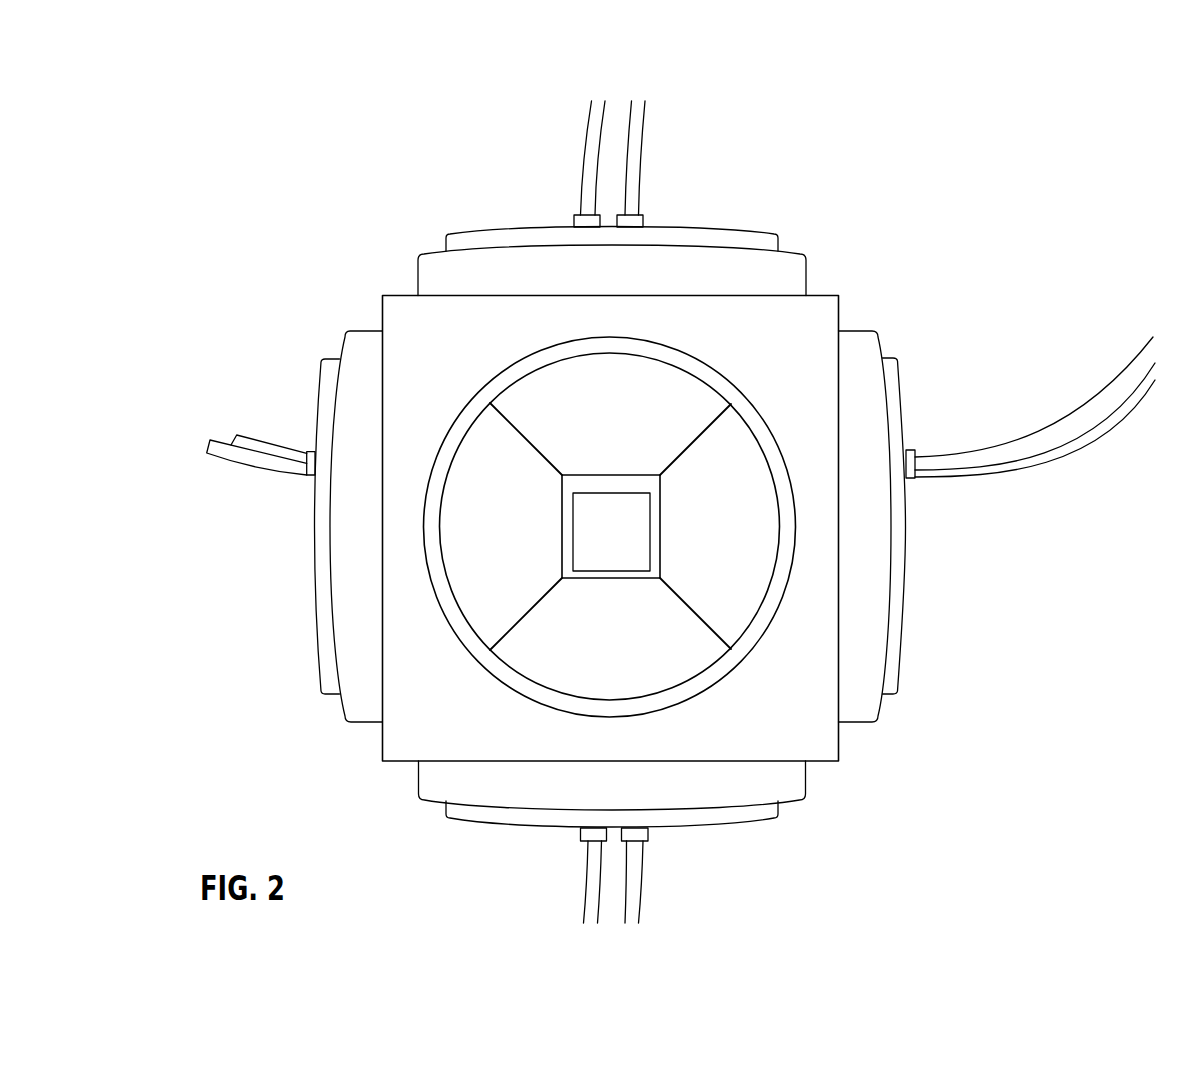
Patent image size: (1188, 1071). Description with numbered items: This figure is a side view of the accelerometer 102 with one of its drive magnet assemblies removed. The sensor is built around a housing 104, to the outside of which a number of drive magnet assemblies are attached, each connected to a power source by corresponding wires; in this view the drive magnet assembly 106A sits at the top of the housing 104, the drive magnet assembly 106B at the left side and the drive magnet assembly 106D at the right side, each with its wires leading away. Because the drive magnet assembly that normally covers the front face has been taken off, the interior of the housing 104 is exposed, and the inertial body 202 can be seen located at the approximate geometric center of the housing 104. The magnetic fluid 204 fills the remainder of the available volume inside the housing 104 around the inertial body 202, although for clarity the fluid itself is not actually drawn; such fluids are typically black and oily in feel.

The accelerometer 102 is at (227, 163).
The housing 104 is at (827, 296).
The drive magnet assembly 106A is at (748, 229).
The drive magnet assembly 106B is at (338, 560).
The drive magnet assembly 106D is at (867, 330).
The inertial body 202 is at (630, 525).
The magnetic fluid 204 is at (604, 483).